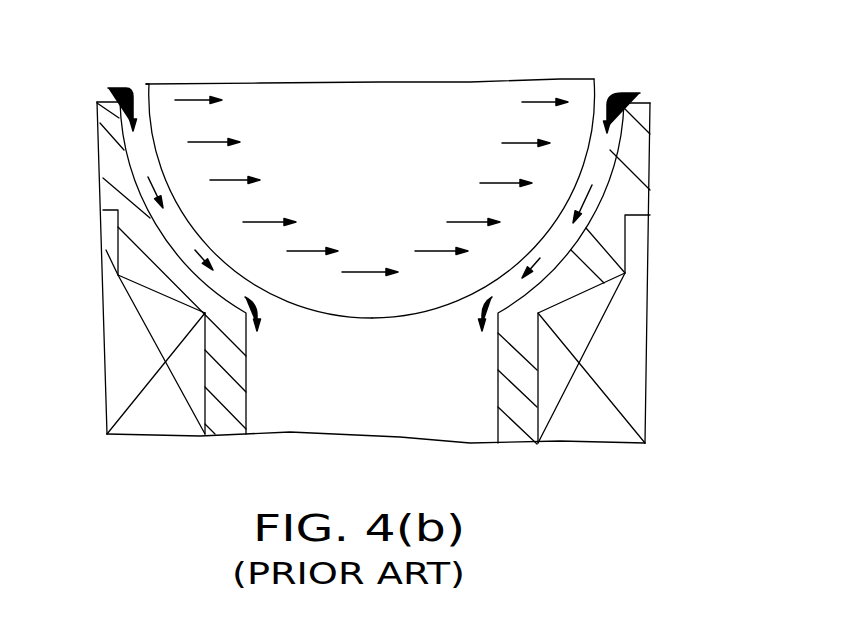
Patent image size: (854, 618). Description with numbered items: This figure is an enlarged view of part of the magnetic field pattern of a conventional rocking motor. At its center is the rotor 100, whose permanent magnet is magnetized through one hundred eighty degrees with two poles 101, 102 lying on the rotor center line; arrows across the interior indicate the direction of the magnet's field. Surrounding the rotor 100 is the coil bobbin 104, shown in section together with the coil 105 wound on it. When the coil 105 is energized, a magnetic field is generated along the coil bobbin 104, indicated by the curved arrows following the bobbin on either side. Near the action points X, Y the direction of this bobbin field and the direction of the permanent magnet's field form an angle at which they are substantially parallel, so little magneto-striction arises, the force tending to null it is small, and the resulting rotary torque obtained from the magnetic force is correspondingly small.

The rotor 100 is at (403, 123).
The pole 101 is at (151, 100).
The pole 102 is at (590, 103).
The coil bobbin 104 is at (517, 420).
The coil 105 is at (617, 429).
The action point X is at (128, 146).
The action point Y is at (611, 151).